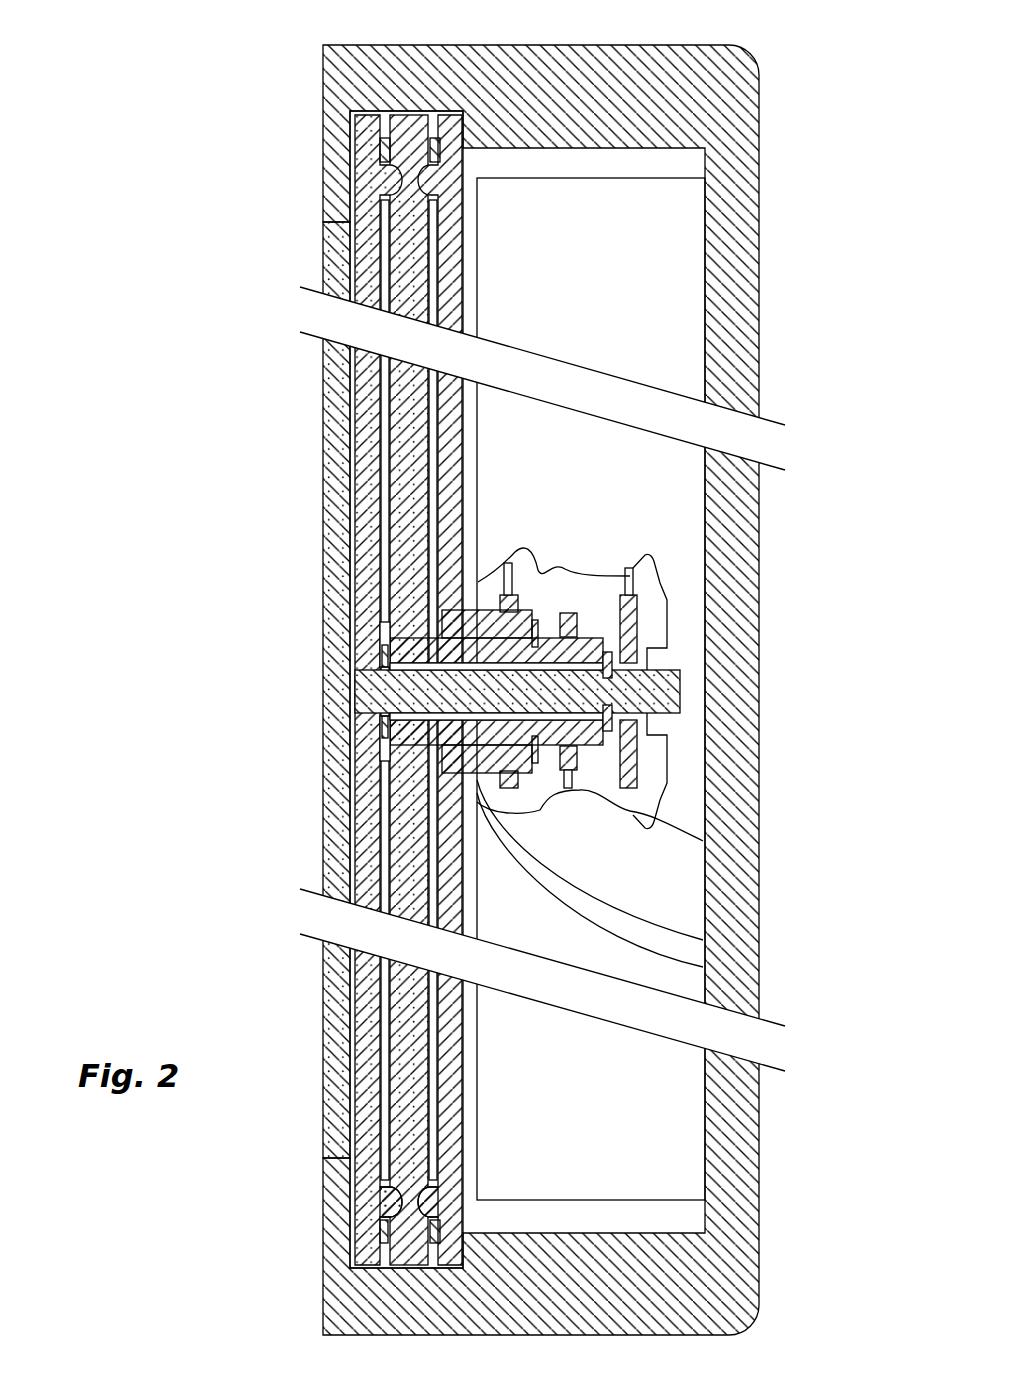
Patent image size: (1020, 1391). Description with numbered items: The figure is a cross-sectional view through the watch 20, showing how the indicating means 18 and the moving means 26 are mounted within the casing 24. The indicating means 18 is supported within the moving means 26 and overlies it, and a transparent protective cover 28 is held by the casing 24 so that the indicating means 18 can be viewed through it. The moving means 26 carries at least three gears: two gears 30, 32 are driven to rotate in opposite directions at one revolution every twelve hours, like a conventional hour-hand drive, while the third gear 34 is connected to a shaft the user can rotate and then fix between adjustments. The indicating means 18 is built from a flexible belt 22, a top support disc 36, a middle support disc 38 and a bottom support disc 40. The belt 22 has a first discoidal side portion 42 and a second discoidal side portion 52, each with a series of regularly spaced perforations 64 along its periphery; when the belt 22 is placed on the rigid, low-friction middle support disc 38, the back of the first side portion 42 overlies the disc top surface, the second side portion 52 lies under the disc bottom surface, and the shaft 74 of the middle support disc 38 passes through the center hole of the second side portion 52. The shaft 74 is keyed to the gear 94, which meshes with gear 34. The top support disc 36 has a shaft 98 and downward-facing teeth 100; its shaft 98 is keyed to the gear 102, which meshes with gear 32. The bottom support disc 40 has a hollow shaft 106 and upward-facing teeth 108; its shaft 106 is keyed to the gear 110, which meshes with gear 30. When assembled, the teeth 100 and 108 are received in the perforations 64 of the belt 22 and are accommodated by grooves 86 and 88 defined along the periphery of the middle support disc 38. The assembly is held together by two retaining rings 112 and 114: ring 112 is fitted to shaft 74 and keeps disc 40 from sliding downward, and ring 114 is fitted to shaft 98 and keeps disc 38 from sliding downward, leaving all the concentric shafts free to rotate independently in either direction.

The indicating means 18 is at (307, 573).
The watch 20 is at (759, 190).
The flexible belt 22 is at (384, 137).
The casing 24 is at (736, 120).
The moving means 26 is at (675, 290).
The transparent protective cover 28 is at (328, 245).
The gear 30 is at (512, 580).
The gear 32 is at (540, 598).
The third gear 34 is at (570, 790).
The top support disc 36 is at (365, 150).
The middle support disc 38 is at (410, 120).
The bottom support disc 40 is at (450, 115).
The first discoidal side portion 42 is at (383, 397).
The second discoidal side portion 52 is at (437, 507).
The perforations 64 is at (383, 1185).
The shaft 74 is at (703, 841).
The groove 86 is at (415, 1215).
The groove 88 is at (392, 1215).
The gear 94 is at (577, 625).
The shaft 98 is at (680, 700).
The teeth 100 is at (385, 1203).
The gear 102 is at (583, 742).
The hollow shaft 106 is at (703, 967).
The teeth 108 is at (433, 1200).
The gear 110 is at (703, 940).
The retaining ring 112 is at (632, 577).
The retaining ring 114 is at (612, 662).